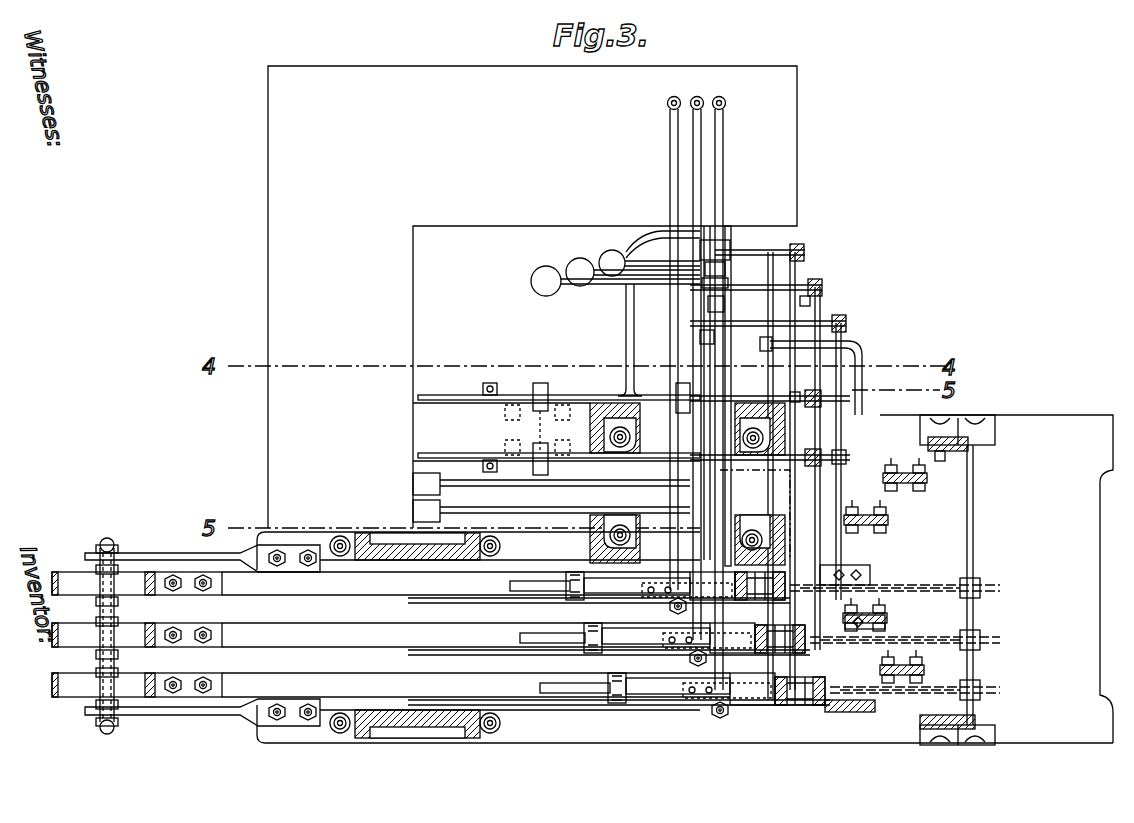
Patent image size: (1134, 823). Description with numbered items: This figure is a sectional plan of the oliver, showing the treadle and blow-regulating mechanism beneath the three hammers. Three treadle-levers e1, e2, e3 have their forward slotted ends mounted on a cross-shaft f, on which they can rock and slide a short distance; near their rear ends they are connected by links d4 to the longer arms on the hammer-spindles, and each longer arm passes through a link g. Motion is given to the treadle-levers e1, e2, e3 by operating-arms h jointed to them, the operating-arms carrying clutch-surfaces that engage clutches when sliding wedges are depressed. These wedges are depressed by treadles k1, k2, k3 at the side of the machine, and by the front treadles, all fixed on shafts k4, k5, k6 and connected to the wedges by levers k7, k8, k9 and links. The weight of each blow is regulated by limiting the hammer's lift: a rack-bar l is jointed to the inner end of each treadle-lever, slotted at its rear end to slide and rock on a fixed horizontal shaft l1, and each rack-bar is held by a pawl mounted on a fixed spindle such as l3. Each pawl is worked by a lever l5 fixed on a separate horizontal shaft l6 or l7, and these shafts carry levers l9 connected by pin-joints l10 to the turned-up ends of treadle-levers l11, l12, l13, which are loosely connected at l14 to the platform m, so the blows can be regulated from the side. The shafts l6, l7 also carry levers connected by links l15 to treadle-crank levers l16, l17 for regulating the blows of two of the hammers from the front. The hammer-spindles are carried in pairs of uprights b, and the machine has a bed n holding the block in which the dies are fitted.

The platform m is at (532, 297).
The loose connection l14 is at (718, 96).
The treadle-lever l11 is at (669, 186).
The treadle-lever l12 is at (698, 200).
The treadle-lever l13 is at (724, 186).
The treadle k1 is at (544, 268).
The treadle k2 is at (580, 260).
The treadle k3 is at (614, 252).
The shaft k4 is at (686, 360).
The shaft k5 is at (678, 390).
The shaft k6 is at (760, 360).
The pin-joint l10 is at (724, 258).
The lever l9 is at (838, 320).
The treadle-crank lever l17 is at (442, 404).
The treadle-crank lever l16 is at (452, 456).
The bed n is at (640, 412).
The link l15 is at (758, 402).
The fixed horizontal spindle l3 is at (790, 496).
The horizontal shaft l7 is at (798, 500).
The cross-shaft f is at (98, 610).
The treadle-lever e1 is at (371, 584).
The treadle-lever e2 is at (381, 635).
The treadle-lever e3 is at (391, 685).
The lever k7 is at (456, 603).
The lever k8 is at (456, 655).
The lever k9 is at (522, 705).
The operating-arm h is at (540, 584).
The link d4 is at (746, 600).
The link g is at (786, 584).
The rack-bar l is at (946, 586).
The lever l5 is at (866, 572).
The horizontal shaft l6 is at (840, 486).
The upright b is at (950, 452).
The fixed horizontal shaft l1 is at (974, 530).